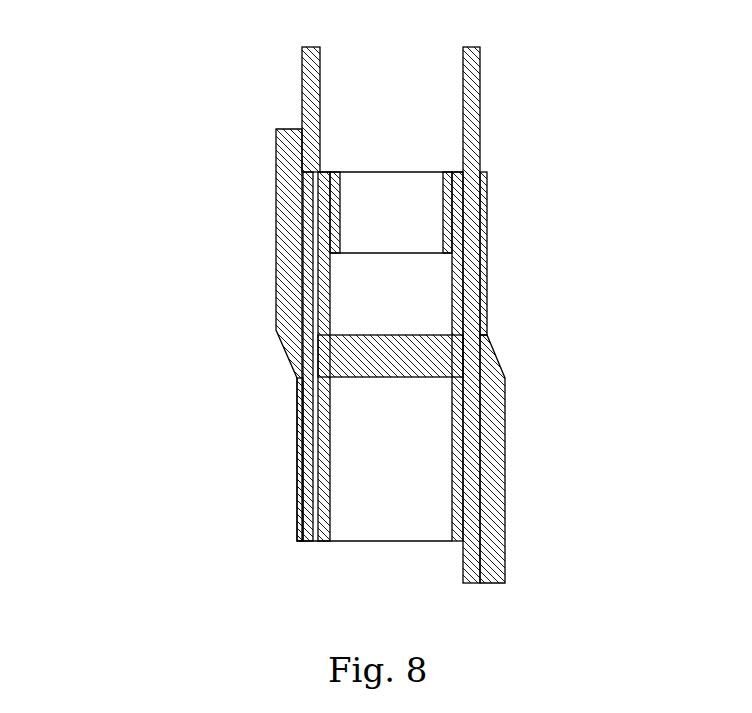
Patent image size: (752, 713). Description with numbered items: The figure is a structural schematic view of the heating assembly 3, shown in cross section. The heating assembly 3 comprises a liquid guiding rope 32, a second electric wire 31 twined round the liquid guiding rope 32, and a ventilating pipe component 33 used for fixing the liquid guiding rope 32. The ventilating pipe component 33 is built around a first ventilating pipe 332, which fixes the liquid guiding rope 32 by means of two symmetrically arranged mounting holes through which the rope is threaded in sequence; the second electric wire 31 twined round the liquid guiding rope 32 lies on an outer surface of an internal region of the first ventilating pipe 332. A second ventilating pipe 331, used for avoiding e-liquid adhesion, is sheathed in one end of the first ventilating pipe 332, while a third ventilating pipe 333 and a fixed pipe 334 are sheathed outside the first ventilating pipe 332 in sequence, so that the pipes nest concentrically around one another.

The heating assembly 3 is at (590, 49).
The second electric wire 31 is at (487, 315).
The liquid guiding rope 32 is at (507, 385).
The ventilating pipe component 33 is at (85, 252).
The second ventilating pipe 331 is at (330, 213).
The first ventilating pipe 332 is at (318, 258).
The third ventilating pipe 333 is at (300, 418).
The fixed pipe 334 is at (300, 452).